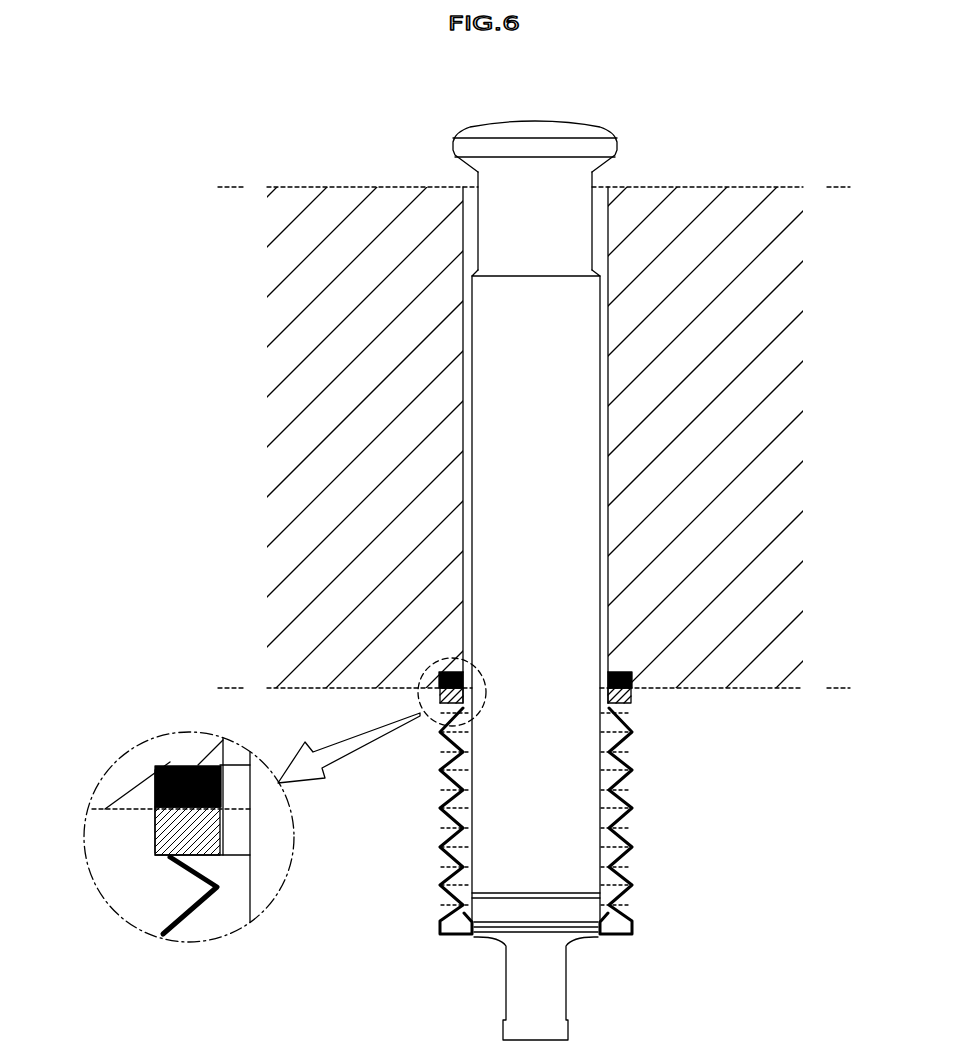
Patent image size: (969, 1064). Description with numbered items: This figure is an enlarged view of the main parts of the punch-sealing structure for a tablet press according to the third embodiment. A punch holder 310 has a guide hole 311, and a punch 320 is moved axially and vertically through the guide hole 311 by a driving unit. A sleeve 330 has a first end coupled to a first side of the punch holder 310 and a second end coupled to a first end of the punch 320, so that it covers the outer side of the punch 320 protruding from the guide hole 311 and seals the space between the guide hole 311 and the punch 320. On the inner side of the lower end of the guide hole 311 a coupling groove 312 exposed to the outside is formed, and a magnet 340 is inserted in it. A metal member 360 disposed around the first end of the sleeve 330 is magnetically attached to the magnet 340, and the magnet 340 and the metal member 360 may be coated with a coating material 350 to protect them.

The punch holder 310 is at (335, 228).
The guide hole 311 is at (600, 198).
The coupling groove 312 is at (608, 671).
The punch 320 is at (580, 402).
The sleeve 330 is at (626, 797).
The magnet 340 is at (632, 679).
The coating material 350 is at (155, 786).
The metal member 360 is at (632, 699).